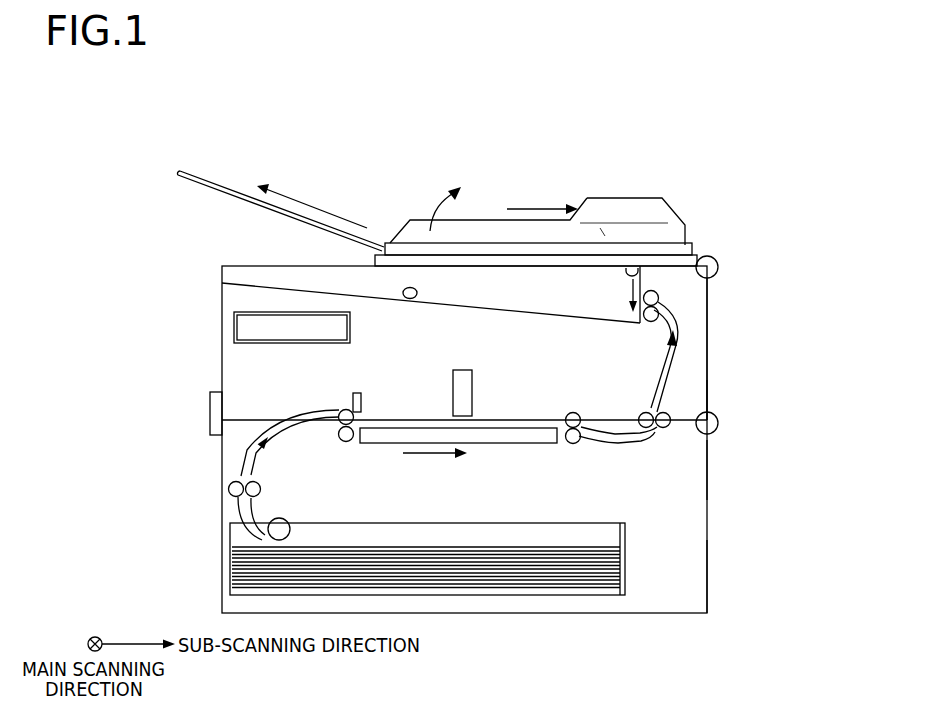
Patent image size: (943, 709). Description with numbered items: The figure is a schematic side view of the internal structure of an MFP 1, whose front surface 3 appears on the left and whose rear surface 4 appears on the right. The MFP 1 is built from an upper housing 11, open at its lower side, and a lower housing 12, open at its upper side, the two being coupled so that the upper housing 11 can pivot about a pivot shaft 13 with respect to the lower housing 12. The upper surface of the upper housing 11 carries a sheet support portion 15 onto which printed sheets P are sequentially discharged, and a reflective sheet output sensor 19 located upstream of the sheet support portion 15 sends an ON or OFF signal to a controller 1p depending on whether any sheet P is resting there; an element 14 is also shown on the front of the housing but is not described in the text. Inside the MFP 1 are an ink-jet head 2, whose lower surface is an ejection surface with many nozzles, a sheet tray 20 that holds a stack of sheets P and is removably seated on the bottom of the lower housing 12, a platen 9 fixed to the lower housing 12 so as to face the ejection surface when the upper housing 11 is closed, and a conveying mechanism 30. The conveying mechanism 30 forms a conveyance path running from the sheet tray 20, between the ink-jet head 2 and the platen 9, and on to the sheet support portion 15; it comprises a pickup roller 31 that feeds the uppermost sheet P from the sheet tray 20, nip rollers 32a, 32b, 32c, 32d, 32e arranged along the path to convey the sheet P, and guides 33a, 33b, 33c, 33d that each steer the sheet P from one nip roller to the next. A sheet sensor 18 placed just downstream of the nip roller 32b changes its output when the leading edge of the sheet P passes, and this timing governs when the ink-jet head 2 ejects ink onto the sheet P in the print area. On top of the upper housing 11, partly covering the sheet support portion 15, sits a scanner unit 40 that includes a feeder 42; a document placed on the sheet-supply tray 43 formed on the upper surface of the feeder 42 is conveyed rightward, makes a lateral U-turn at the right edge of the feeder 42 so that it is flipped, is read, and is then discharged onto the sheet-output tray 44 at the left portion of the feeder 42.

The MFP 1 is at (774, 167).
The controller 1p is at (268, 312).
The ink-jet head 2 is at (462, 370).
The front surface 3 is at (222, 292).
The rear surface 4 is at (709, 309).
The platen 9 is at (482, 448).
The upper housing 11 is at (700, 398).
The lower housing 12 is at (697, 571).
The pivot shaft 13 is at (715, 421).
The operation panel 14 is at (210, 397).
The sheet support portion 15 is at (410, 299).
The sheet sensor 18 is at (357, 393).
The sheet output sensor 19 is at (622, 276).
The sheet tray 20 is at (221, 592).
The conveying mechanism 30 is at (697, 464).
The pickup roller 31 is at (290, 521).
The nip roller 32a is at (228, 489).
The nip roller 32b is at (349, 444).
The nip roller 32c is at (568, 446).
The nip roller 32d is at (660, 440).
The nip roller 32e is at (638, 319).
The guide 33a is at (230, 512).
The guide 33b is at (283, 426).
The guide 33c is at (608, 447).
The guide 33d is at (677, 338).
The scanner unit 40 is at (639, 198).
The feeder 42 is at (605, 235).
The sheet-supply tray 43 is at (477, 218).
The sheet-output tray 44 is at (185, 171).
The sheet P is at (412, 547).